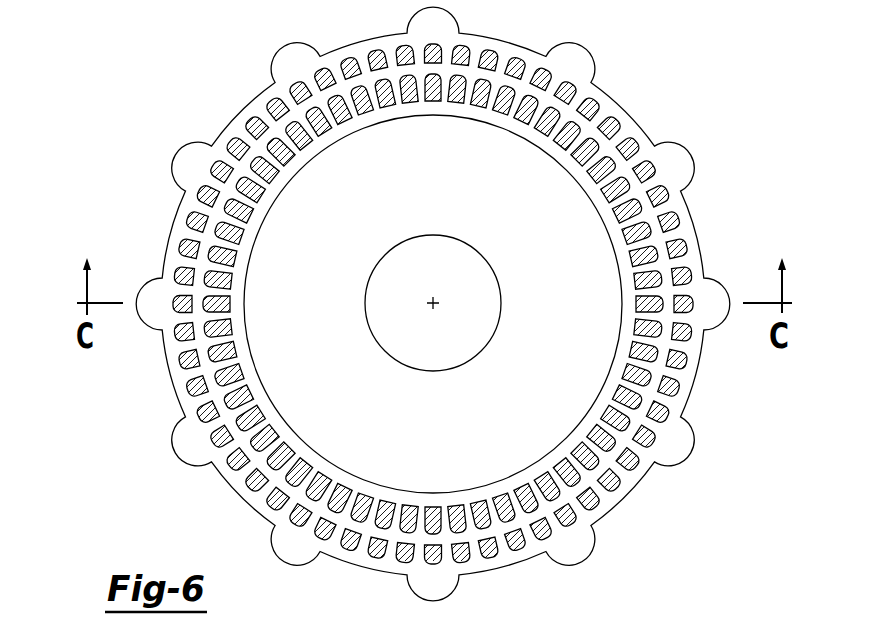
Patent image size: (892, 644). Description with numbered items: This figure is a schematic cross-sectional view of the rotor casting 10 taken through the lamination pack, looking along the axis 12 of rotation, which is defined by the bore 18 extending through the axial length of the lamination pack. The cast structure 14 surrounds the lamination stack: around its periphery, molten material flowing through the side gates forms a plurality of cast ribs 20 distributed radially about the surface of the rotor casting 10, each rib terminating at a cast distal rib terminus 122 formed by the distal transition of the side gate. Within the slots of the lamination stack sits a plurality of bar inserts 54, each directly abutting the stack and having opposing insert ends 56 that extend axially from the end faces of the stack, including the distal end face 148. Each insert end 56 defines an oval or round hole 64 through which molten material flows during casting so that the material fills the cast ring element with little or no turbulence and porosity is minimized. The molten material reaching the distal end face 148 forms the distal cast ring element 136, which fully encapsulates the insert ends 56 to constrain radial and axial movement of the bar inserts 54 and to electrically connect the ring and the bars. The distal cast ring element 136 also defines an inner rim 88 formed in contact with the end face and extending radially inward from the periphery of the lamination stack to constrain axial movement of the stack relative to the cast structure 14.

The rotor casting 10 is at (446, 315).
The axis 12 is at (436, 306).
The cast structure 14 is at (430, 315).
The bore 18 is at (390, 334).
The cast ribs 20 is at (430, 315).
The bar insert 54 is at (446, 303).
The insert ends 56 is at (480, 82).
The hole 64 is at (407, 68).
The inner rim 88 is at (334, 148).
The cast distal rib terminus 122 is at (446, 315).
The distal cast ring element 136 is at (700, 233).
The distal end face 148 is at (446, 304).